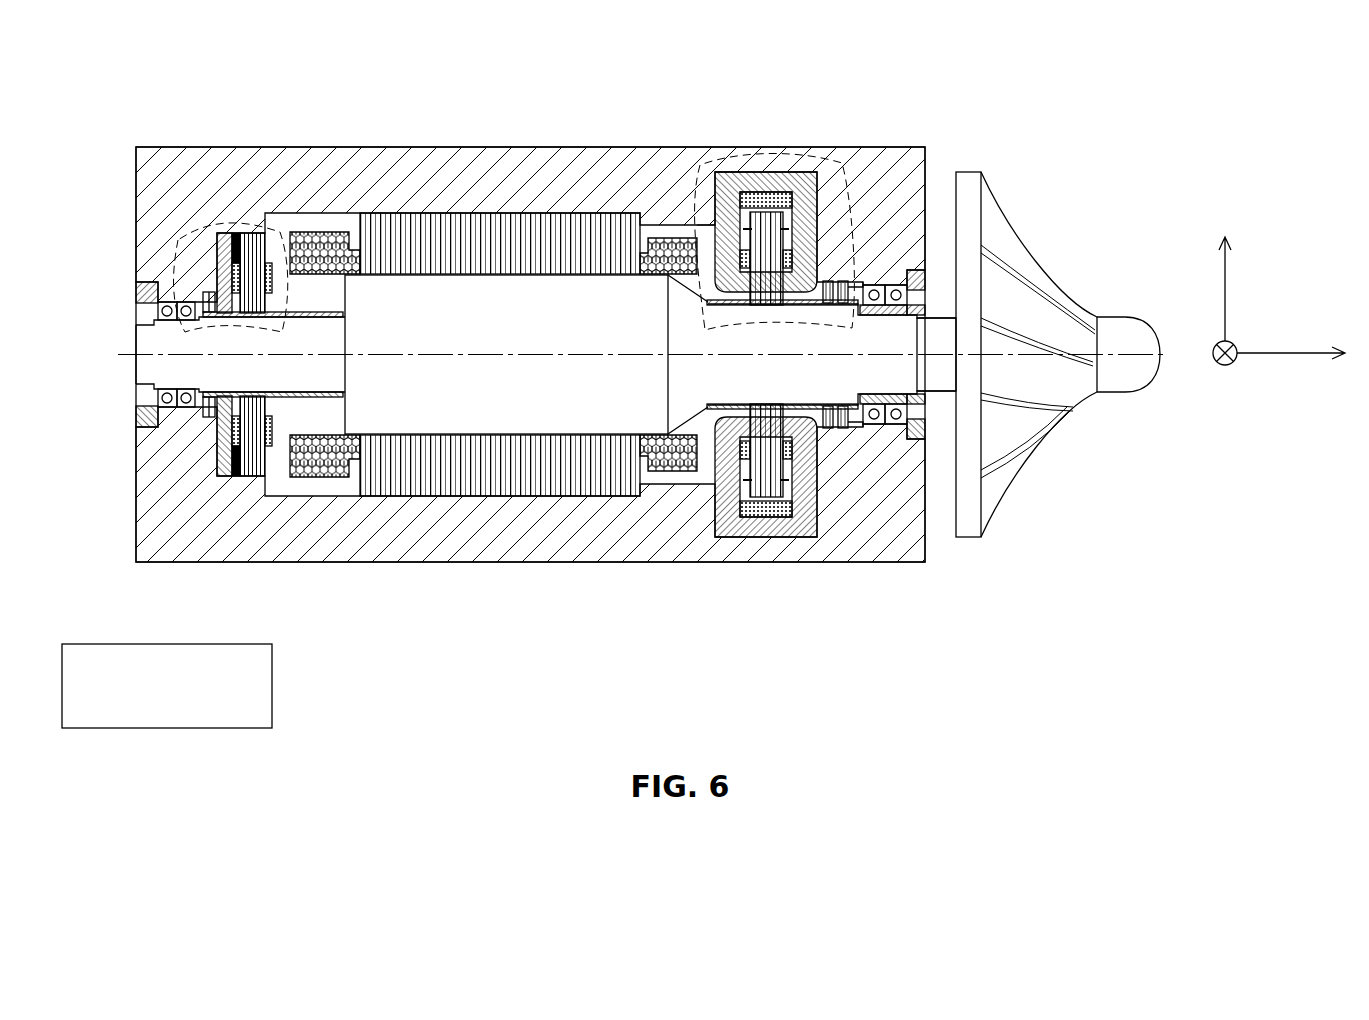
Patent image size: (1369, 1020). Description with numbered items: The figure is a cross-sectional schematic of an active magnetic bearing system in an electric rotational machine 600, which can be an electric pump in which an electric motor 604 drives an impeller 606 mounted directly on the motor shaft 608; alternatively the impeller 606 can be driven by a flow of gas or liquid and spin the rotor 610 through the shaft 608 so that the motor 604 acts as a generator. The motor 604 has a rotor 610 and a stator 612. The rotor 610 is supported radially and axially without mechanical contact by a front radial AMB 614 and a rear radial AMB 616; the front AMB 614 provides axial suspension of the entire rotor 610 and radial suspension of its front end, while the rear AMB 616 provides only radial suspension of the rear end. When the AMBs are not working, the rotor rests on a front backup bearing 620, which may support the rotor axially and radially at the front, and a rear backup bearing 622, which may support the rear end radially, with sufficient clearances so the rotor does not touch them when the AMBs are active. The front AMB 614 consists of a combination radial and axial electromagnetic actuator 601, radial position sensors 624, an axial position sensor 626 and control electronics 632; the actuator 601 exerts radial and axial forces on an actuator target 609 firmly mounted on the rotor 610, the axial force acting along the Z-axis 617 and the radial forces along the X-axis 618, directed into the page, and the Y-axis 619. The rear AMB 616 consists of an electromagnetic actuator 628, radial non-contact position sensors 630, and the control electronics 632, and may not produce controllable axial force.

The electric rotational machine 600 is at (1030, 138).
The combination radial and axial electromagnetic actuator 601 is at (750, 170).
The electric motor 604 is at (365, 180).
The impeller 606 is at (1010, 262).
The motor shaft 608 is at (937, 385).
The actuator target 609 is at (717, 425).
The rotor 610 is at (422, 300).
The stator 612 is at (561, 230).
The front radial AMB 614 is at (703, 215).
The rear radial AMB 616 is at (200, 330).
The Z-axis 617 is at (1291, 385).
The X-axis 618 is at (1228, 386).
The Y-axis 619 is at (1250, 289).
The front backup bearing 620 is at (925, 270).
The rear backup bearing 622 is at (168, 300).
The radial position sensors 624 is at (830, 282).
The axial position sensor 626 is at (882, 285).
The electromagnetic actuator 628 is at (245, 235).
The radial non-contact position sensors 630 is at (196, 300).
The control electronics 632 is at (255, 563).